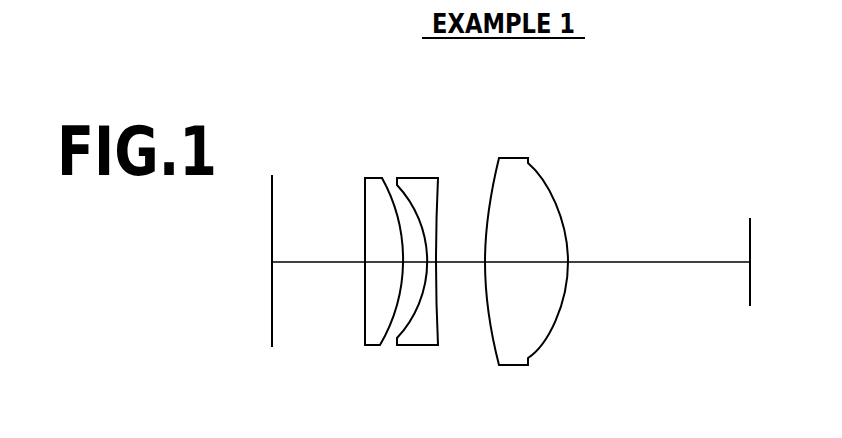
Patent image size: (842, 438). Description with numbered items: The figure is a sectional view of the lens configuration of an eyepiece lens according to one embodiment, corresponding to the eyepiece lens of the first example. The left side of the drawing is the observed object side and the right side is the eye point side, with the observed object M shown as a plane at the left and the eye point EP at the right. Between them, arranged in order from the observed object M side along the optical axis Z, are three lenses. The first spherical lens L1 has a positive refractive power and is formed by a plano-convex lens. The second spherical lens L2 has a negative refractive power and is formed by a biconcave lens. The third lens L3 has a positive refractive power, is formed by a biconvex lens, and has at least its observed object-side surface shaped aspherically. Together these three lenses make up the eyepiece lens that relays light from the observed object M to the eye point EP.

The first spherical lens L1 is at (372, 178).
The second spherical lens L2 is at (425, 178).
The third lens L3 is at (517, 165).
The observed object M is at (272, 337).
The optical axis Z is at (270, 262).
The eye point EP is at (750, 296).